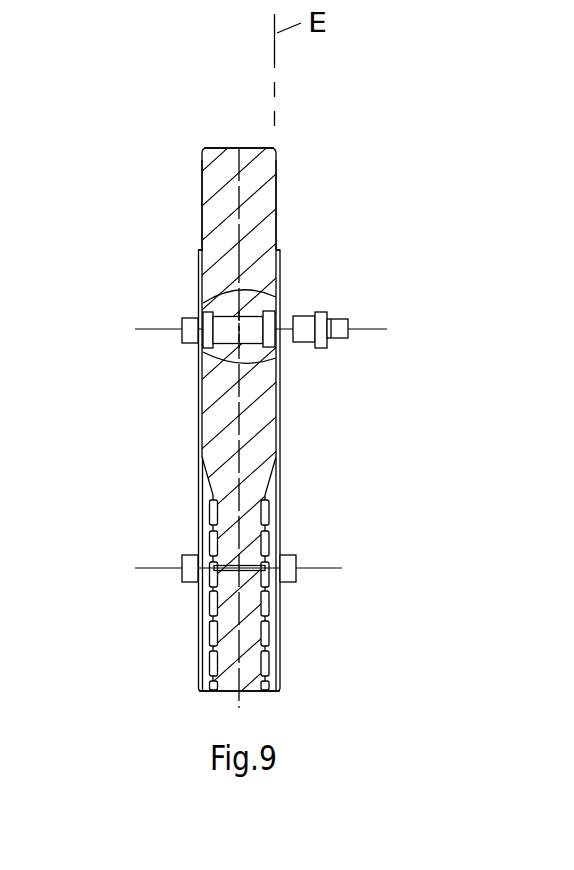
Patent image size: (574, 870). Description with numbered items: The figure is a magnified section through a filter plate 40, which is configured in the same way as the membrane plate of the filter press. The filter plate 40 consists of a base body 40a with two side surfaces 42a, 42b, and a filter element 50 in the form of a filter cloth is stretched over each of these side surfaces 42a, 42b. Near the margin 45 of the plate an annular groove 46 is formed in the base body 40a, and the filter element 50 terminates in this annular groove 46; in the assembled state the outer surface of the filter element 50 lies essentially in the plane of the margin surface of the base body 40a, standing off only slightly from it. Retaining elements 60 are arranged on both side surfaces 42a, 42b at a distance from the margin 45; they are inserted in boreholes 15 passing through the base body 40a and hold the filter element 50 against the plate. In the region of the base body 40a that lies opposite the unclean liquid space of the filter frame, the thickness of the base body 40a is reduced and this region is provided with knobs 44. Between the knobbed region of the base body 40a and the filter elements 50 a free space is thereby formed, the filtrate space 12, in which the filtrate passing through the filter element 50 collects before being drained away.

The filtrate space 12 is at (201, 678).
The boreholes 15 is at (250, 314).
The filter plate 40 is at (262, 137).
The base body 40a is at (247, 180).
The side surface 42a is at (199, 197).
The side surface 42b is at (279, 197).
The knobs 44 is at (271, 608).
The margin 45 is at (218, 147).
The annular groove 46 is at (200, 241).
The filter element 50 is at (282, 532).
The retaining elements 60 is at (183, 320).